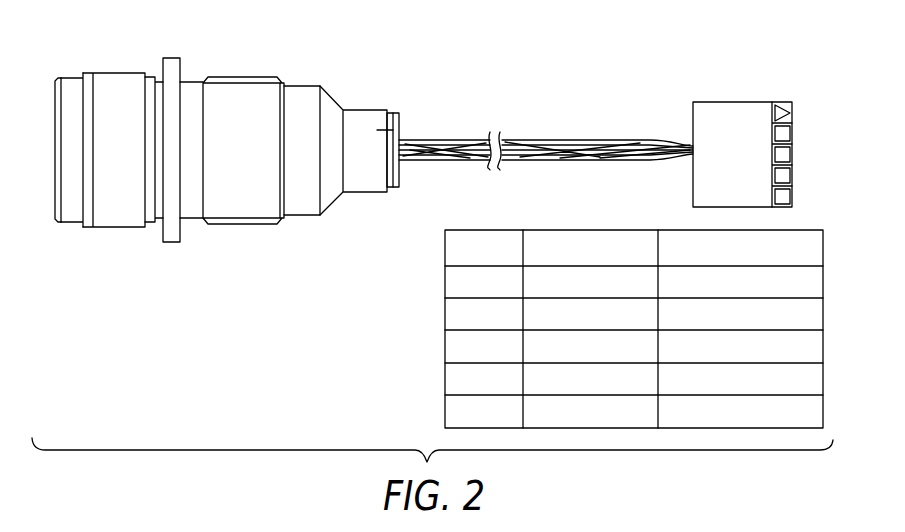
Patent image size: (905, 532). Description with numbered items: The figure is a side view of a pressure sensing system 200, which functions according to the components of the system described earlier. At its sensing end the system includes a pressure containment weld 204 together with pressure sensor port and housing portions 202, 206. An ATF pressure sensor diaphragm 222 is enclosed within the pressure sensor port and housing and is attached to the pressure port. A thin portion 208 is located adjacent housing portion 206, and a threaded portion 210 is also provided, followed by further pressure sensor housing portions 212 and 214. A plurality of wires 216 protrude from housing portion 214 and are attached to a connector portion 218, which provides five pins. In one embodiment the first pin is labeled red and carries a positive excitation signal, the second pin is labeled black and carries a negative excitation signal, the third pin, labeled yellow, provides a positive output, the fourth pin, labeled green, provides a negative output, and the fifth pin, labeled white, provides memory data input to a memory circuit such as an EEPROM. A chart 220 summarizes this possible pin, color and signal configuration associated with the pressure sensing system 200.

The pressure sensing system 200 is at (410, 57).
The pressure sensor port and housing portion 202 is at (72, 213).
The pressure containment weld 204 is at (90, 225).
The pressure sensor port and housing portion 206 is at (114, 112).
The thin portion 208 is at (173, 72).
The threaded portion 210 is at (240, 188).
The pressure sensor housing portion 212 is at (336, 108).
The pressure sensor housing portion 214 is at (398, 120).
The plurality of wires 216 is at (463, 140).
The connector portion 218 is at (718, 102).
The chart 220 is at (641, 227).
The ATF pressure sensor diaphragm 222 is at (145, 158).